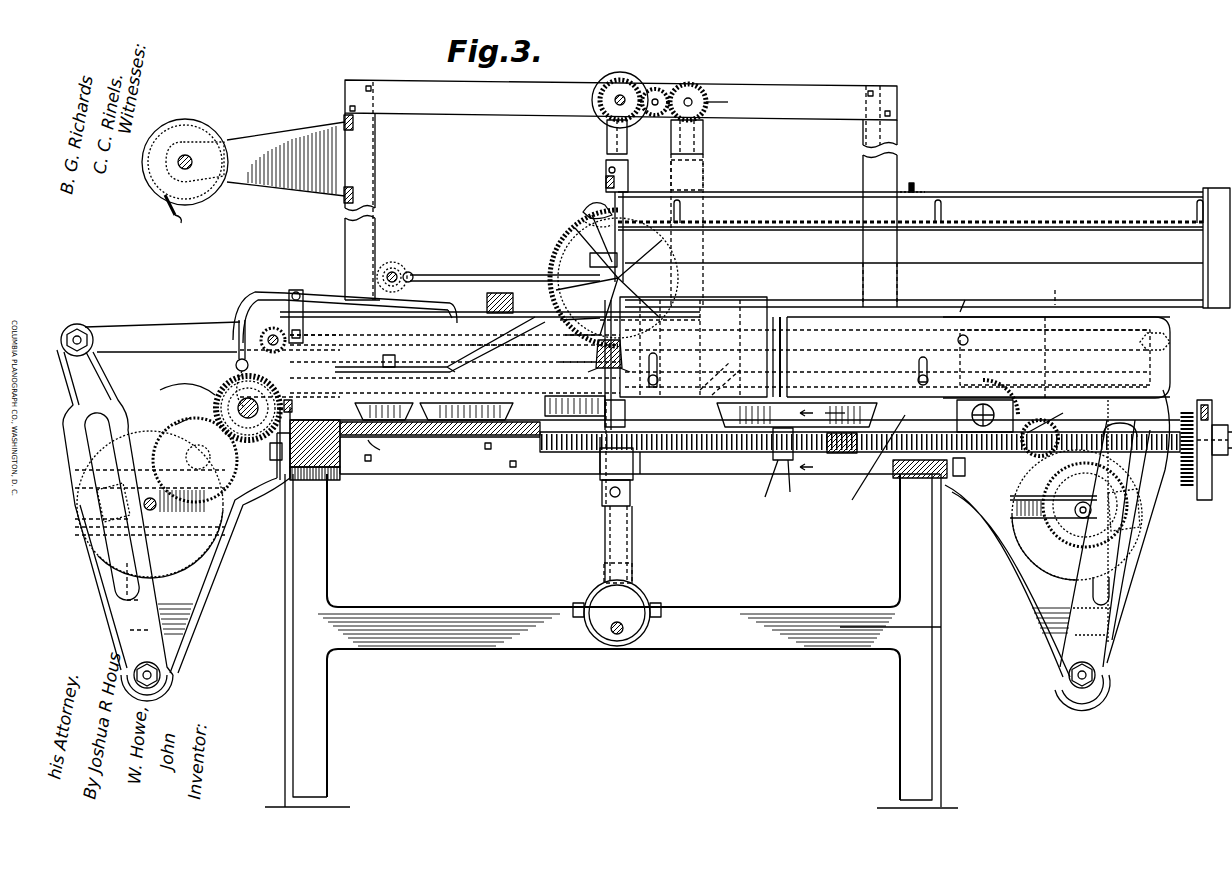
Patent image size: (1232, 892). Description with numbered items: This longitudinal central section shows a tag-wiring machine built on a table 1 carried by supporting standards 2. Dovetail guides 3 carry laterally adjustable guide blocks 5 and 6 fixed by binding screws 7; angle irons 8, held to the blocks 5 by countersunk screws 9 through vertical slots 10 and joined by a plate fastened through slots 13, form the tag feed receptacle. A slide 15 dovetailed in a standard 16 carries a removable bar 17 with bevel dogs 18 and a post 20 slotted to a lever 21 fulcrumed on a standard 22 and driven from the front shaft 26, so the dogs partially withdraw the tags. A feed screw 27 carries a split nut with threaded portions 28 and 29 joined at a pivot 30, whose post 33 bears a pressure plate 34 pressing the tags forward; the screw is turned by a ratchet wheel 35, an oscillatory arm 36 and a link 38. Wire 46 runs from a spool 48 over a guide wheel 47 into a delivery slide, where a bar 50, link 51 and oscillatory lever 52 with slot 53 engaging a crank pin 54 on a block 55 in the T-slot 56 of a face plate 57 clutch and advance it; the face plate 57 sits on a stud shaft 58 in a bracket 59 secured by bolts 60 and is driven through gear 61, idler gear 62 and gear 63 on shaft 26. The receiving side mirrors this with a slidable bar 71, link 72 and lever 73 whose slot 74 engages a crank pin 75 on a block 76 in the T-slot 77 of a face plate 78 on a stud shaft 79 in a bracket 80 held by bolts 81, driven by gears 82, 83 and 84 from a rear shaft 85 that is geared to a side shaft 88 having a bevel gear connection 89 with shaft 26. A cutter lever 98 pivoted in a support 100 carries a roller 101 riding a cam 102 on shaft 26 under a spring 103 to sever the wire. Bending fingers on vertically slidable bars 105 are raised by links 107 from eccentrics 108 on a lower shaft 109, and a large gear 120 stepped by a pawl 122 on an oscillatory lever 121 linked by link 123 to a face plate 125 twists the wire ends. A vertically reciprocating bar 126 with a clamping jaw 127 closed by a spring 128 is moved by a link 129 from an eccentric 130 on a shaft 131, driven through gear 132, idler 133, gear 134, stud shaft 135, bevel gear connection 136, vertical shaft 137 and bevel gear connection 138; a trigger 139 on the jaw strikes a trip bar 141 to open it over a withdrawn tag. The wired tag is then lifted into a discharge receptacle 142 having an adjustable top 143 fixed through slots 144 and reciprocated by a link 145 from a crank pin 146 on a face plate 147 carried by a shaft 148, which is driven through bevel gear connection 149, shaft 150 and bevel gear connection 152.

The base bar 1 is at (460, 435).
The frame leg rail 2 is at (330, 505).
The rack plate 3 is at (835, 413).
The bracket 5 is at (875, 467).
The inclined plate 6 is at (440, 344).
The bed plate 7 is at (609, 455).
The carriage plate 8 is at (830, 397).
The bolt 9 is at (660, 378).
The slot 10 is at (657, 362).
The shaft 13 is at (650, 313).
The bevel gear 15 is at (596, 348).
The bevel gear 16 is at (600, 375).
The vertical shaft 17 is at (640, 342).
The bearing 18 is at (564, 361).
The gear 20 is at (570, 332).
The shaft 21 is at (569, 317).
The stop 22 is at (390, 359).
The gear 26 is at (238, 406).
The rack 27 is at (830, 452).
The slide block 28 is at (773, 420).
The slide 29 is at (765, 486).
The slide 30 is at (790, 484).
The carriage plate 33 is at (787, 345).
The guide bar 34 is at (775, 330).
The plate 35 is at (1190, 485).
The bracket 36 is at (1212, 505).
The pinion 38 is at (1190, 405).
The belt shifter 46 is at (180, 224).
The lever 47 is at (315, 340).
The pulley 48 is at (203, 190).
The gear 50 is at (270, 328).
The bar 51 is at (190, 323).
The lever arm 52 is at (90, 378).
The slot 53 is at (100, 420).
The block 54 is at (97, 492).
The block 55 is at (90, 516).
The gear 56 is at (210, 505).
The disk 57 is at (172, 565).
The pin 58 is at (153, 510).
The strut 59 is at (233, 503).
The bracket 60 is at (268, 459).
The lines 61 is at (147, 450).
The arm 62 is at (171, 416).
The link 63 is at (180, 393).
The bar 71 is at (969, 296).
The bar 72 is at (1055, 289).
The carriage 73 is at (1183, 372).
The arm 74 is at (1128, 427).
The block 75 is at (1143, 515).
The arm 76 is at (1160, 535).
The gear 77 is at (1065, 515).
The bar 78 is at (1030, 530).
The bar 79 is at (1050, 508).
The lever 80 is at (1000, 480).
The bracket 81 is at (965, 466).
The disk 82 is at (1055, 545).
The rack 83 is at (1056, 419).
The gear 84 is at (1025, 418).
The gear 85 is at (975, 395).
The plate 88 is at (512, 403).
The rod 89 is at (290, 390).
The rod 98 is at (255, 292).
The link 100 is at (296, 290).
The pivot 101 is at (236, 363).
The arm 102 is at (238, 372).
The rod 103 is at (290, 359).
The bracket 105 is at (625, 415).
The column 107 is at (632, 545).
The hub 108 is at (640, 598).
The shaft 109 is at (623, 628).
The gear wheel 120 is at (570, 235).
The pawl 121 is at (583, 208).
The bracket 122 is at (606, 175).
The rod 123 is at (505, 345).
The stop 125 is at (270, 452).
The rod 126 is at (623, 205).
The link 127 is at (594, 226).
The pawl 128 is at (585, 222).
The column 129 is at (607, 138).
The wheel 130 is at (630, 78).
The shaft 131 is at (614, 100).
The gear 132 is at (597, 85).
The pinion 133 is at (662, 90).
The gear 134 is at (700, 88).
The shaft 135 is at (731, 100).
The column 136 is at (703, 128).
The column 137 is at (703, 172).
The lines 138 is at (723, 372).
The block 139 is at (590, 258).
The block 141 is at (513, 300).
The bar 142 is at (924, 248).
The pin 143 is at (888, 220).
The pin 144 is at (1197, 210).
The rail 145 is at (515, 275).
The pin 146 is at (413, 272).
The gear 147 is at (404, 268).
The gear 148 is at (392, 272).
The column 149 is at (362, 287).
The rod 150 is at (456, 303).
The plate 152 is at (450, 403).